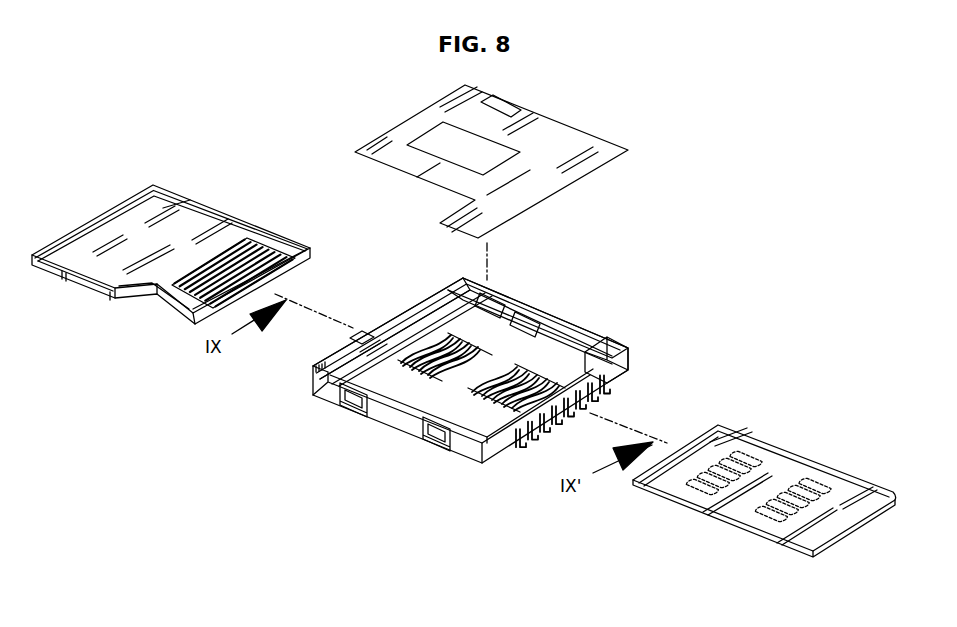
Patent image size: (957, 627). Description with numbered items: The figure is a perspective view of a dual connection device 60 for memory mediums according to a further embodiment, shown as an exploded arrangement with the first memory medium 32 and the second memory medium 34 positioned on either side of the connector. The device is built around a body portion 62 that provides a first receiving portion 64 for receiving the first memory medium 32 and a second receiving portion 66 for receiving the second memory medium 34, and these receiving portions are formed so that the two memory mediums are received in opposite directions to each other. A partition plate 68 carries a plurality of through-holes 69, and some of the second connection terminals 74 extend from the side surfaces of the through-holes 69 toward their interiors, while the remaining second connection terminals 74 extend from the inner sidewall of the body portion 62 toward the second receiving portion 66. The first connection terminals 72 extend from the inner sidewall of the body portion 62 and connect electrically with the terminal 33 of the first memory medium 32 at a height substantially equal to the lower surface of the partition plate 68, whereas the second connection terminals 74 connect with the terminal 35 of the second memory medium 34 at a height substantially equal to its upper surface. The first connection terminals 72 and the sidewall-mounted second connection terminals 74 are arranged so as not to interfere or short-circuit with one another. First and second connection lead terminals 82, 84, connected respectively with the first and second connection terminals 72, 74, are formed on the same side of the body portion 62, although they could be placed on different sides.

The first memory medium 32 is at (166, 190).
The terminal of the first memory medium 33 is at (180, 292).
The second memory medium 34 is at (767, 438).
The terminal of the second memory medium 35 is at (762, 513).
The dual connection device 60 is at (684, 251).
The body portion 62 is at (315, 380).
The first receiving portion 64 is at (372, 316).
The second receiving portion 66 is at (598, 387).
The partition plate 68 is at (428, 342).
The through-hole 69 is at (358, 337).
The first connection terminal 72 is at (480, 385).
The second connection terminal 74 is at (415, 380).
The first connection lead terminal 82 is at (524, 430).
The second connection lead terminal 84 is at (560, 420).